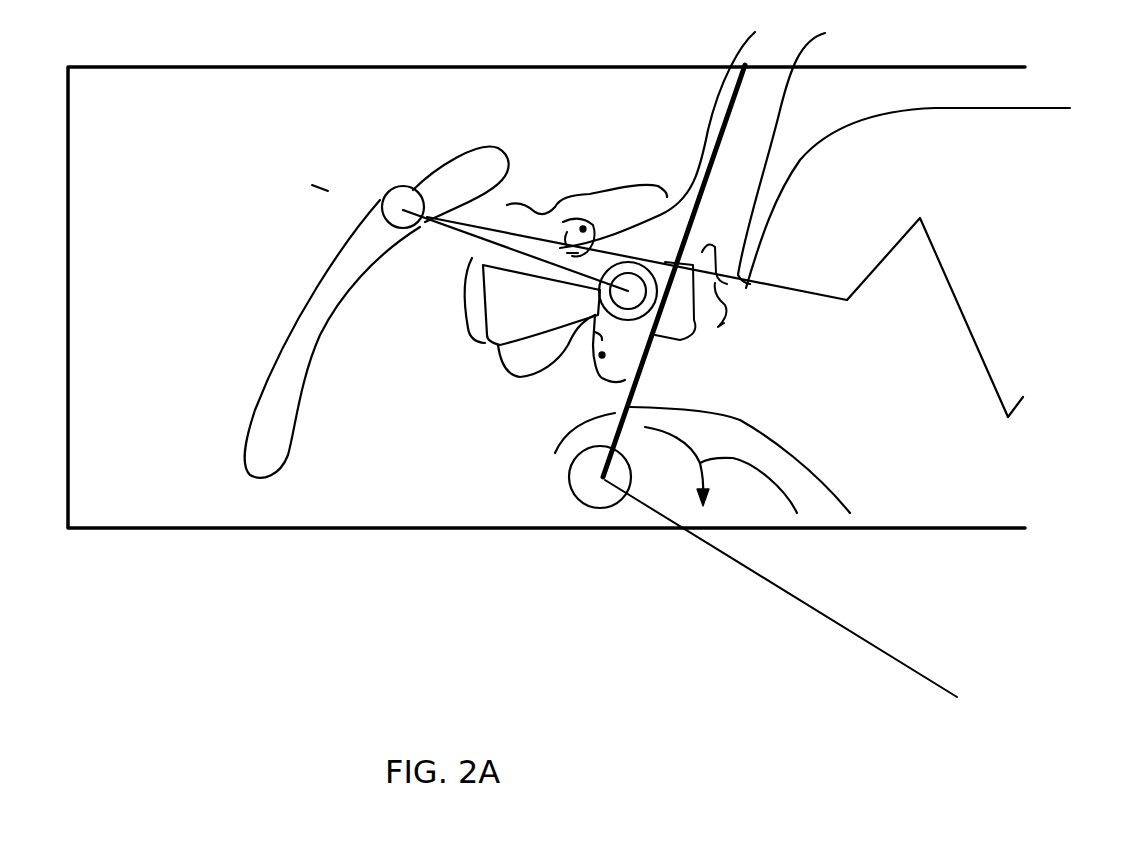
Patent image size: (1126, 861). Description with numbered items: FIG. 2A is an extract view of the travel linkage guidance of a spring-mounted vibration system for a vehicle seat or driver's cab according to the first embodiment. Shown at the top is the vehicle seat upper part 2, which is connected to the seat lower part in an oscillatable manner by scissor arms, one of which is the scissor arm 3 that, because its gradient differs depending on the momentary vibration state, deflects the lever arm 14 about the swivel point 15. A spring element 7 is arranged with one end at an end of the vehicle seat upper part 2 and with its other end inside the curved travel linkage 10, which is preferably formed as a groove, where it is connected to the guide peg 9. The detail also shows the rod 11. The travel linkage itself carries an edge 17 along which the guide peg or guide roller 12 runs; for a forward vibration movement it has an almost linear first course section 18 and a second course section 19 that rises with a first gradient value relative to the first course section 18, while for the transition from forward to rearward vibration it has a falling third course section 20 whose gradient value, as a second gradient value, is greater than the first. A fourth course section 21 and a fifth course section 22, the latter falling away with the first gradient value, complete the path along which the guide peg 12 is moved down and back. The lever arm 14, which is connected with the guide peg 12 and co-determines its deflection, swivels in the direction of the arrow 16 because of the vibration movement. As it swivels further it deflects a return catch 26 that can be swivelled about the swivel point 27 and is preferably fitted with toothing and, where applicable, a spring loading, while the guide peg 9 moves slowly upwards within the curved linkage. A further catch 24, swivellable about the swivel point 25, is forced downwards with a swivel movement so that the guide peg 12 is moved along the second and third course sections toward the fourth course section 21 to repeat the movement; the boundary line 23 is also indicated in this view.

The vehicle seat upper part 2 is at (878, 70).
The scissor arm 3 is at (760, 582).
The spring element 7 is at (800, 292).
The guide peg 9 is at (417, 193).
The curved travel linkage 10 is at (312, 320).
The rod 11 is at (427, 222).
The guide peg 12 is at (780, 173).
The lever arm 14 is at (555, 453).
The swivel point 15 is at (602, 490).
The arrow 16 is at (797, 513).
The edge 17 is at (503, 368).
The first course section 18 is at (674, 129).
The second course section 19 is at (602, 181).
The third course section 20 is at (471, 300).
The fourth course section 21 is at (555, 368).
The fifth course section 22 is at (850, 513).
The skull 23 is at (925, 191).
The further catch 24 is at (746, 66).
The swivel point 25 is at (629, 267).
The return catch 26 is at (607, 357).
The swivel point 27 is at (613, 362).